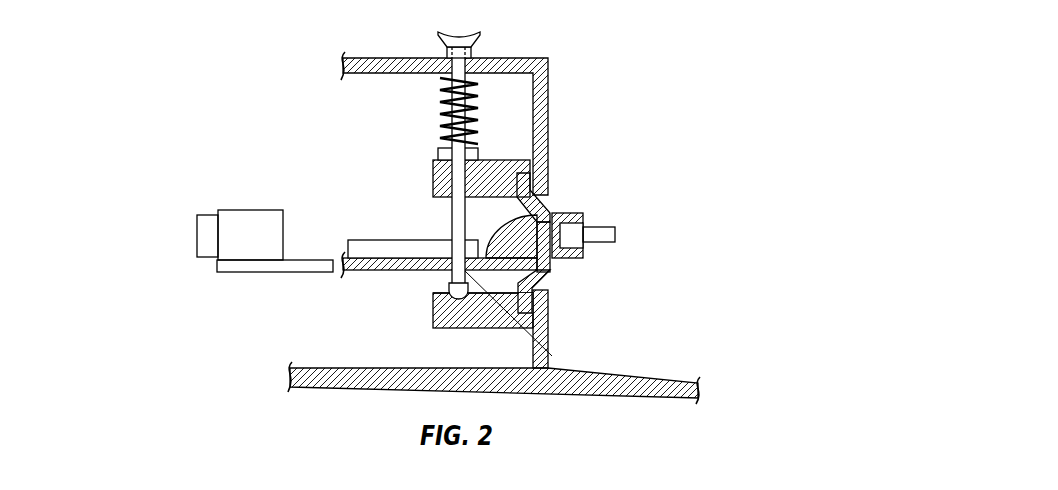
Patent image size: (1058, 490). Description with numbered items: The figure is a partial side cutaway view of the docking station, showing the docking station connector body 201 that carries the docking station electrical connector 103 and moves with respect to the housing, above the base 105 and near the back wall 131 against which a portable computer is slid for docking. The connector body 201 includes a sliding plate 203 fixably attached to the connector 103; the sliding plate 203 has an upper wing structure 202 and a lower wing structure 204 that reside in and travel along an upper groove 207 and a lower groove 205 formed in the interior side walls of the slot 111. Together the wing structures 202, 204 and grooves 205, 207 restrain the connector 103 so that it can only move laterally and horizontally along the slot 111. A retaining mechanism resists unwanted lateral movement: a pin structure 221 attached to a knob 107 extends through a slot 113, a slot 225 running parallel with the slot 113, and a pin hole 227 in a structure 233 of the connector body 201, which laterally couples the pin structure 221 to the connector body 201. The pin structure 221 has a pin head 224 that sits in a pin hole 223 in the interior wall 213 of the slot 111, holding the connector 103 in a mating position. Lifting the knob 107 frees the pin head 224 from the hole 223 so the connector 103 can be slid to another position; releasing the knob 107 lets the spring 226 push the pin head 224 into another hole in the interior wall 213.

The docking station connector body 201 is at (636, 201).
The docking station electrical connector 103 is at (615, 236).
The base 105 is at (642, 373).
The knob 107 is at (433, 32).
The slot 111 is at (557, 202).
The slot 113 is at (467, 58).
The back wall 131 is at (548, 75).
The upper wing structure 202 is at (548, 152).
The sliding plate 203 is at (549, 263).
The lower wing structure 204 is at (547, 301).
The lower groove 205 is at (533, 300).
The upper groove 207 is at (517, 183).
The interior wall 213 is at (433, 328).
The pin structure 221 is at (453, 220).
The pin hole 223 is at (456, 297).
The pin head 224 is at (433, 293).
The slot 225 is at (483, 160).
The spring 226 is at (445, 85).
The pin hole 227 is at (552, 356).
The structure 233 is at (348, 262).